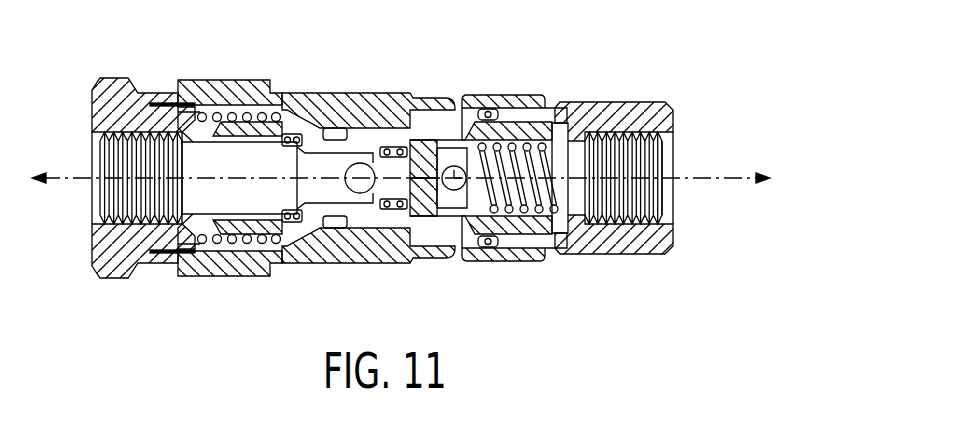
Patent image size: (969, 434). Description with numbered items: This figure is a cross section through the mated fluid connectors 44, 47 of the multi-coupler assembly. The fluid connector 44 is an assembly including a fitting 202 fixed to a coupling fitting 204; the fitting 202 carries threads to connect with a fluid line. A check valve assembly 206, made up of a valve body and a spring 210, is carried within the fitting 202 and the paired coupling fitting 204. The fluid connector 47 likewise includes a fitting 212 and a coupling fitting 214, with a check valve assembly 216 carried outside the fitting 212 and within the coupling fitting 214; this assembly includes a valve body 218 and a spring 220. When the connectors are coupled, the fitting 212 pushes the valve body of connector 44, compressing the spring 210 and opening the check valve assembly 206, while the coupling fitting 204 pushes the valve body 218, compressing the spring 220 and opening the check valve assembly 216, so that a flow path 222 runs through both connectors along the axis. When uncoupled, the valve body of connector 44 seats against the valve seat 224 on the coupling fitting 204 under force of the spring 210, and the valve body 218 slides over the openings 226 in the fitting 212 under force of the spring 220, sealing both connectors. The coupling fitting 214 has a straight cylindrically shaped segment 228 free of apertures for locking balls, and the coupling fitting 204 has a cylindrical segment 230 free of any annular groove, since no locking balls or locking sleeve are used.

The fluid connector 47 is at (192, 64).
The fluid connector 44 is at (573, 88).
The fitting 212 is at (117, 79).
The coupling fitting 214 is at (233, 81).
The check valve assembly 216 is at (232, 253).
The valve body 218 is at (283, 262).
The spring 220 is at (208, 270).
The straight cylindrically shaped segment 228 is at (365, 98).
The valve seat 224 is at (418, 100).
The openings 226 is at (386, 182).
The cylindrical segment 230 is at (453, 242).
The coupling fitting 204 is at (503, 100).
The check valve assembly 206 is at (517, 229).
The spring 210 is at (543, 218).
The fitting 202 is at (650, 107).
The flow path 222 is at (698, 177).